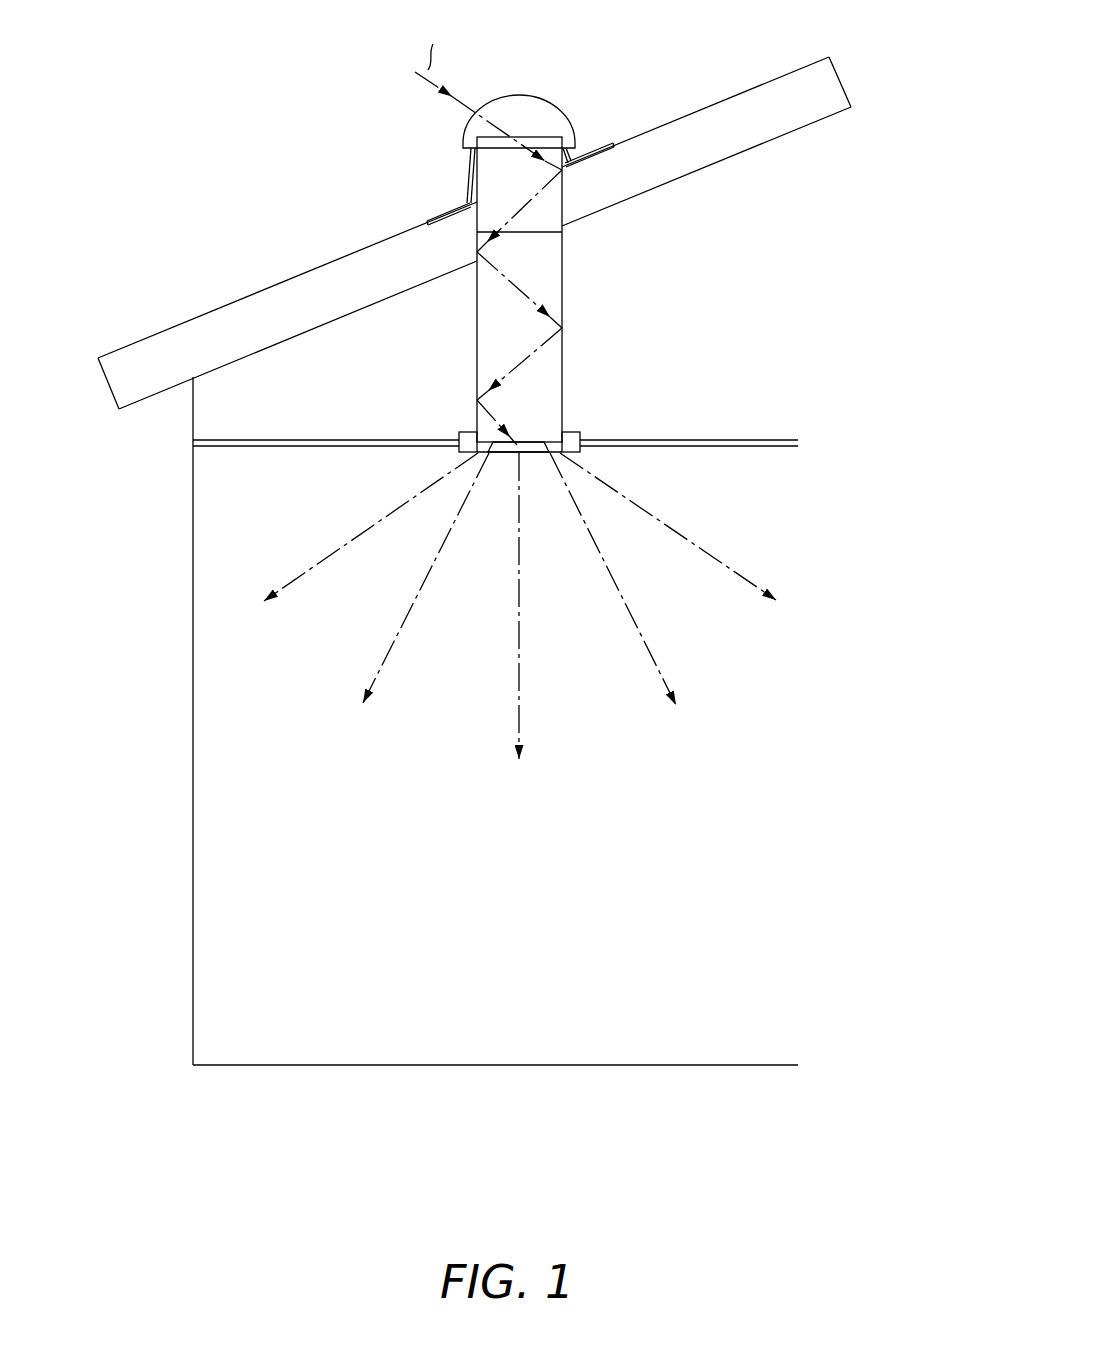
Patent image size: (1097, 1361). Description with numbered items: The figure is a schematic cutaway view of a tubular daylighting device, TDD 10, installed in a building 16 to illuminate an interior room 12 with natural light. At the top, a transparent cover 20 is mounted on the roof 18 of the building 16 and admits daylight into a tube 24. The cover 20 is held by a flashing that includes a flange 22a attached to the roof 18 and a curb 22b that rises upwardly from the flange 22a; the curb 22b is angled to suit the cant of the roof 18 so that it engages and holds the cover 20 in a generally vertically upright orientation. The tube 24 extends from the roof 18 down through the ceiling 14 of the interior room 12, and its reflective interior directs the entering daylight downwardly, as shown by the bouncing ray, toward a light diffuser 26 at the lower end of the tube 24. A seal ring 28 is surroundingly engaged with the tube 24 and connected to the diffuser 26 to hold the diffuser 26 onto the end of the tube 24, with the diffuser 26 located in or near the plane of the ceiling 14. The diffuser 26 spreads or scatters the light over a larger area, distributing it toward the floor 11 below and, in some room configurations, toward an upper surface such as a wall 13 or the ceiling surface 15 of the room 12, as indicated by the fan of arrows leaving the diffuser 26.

The TDD 10 is at (536, 270).
The floor 11 is at (522, 1063).
The interior room 12 is at (612, 854).
The wall 13 is at (200, 500).
The ceiling 14 is at (693, 439).
The ceiling surface 15 is at (734, 449).
The building 16 is at (447, 233).
The roof 18 is at (688, 113).
The transparent cover 20 is at (543, 93).
The flange 22a is at (444, 214).
The curb 22b is at (471, 172).
The tube 24 is at (565, 270).
The light diffuser 26 is at (507, 449).
The seal ring 28 is at (470, 452).